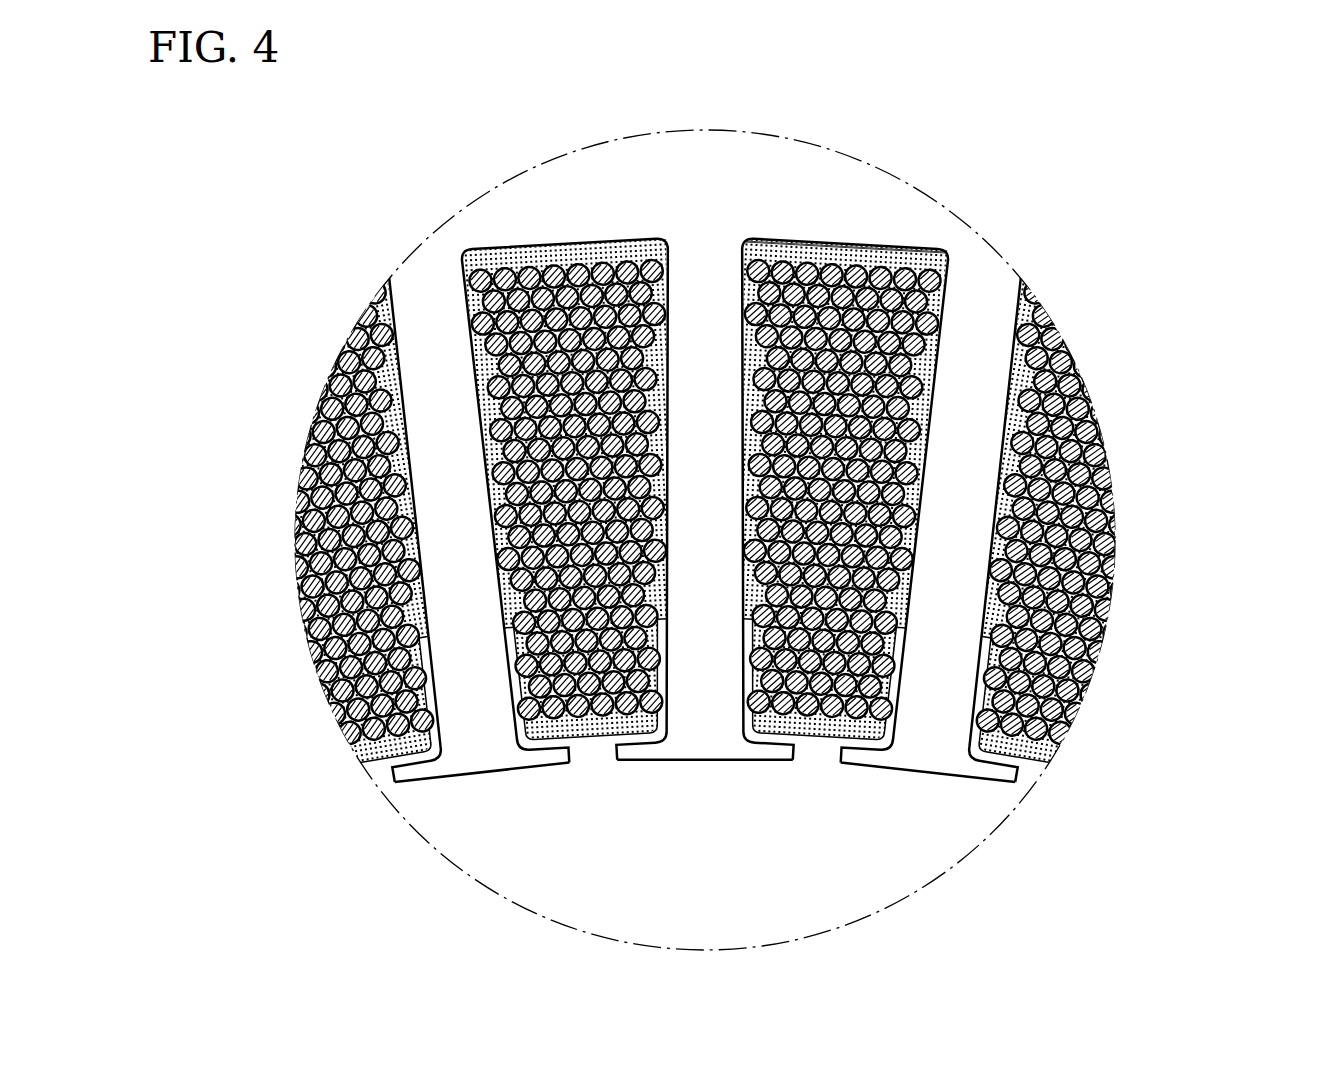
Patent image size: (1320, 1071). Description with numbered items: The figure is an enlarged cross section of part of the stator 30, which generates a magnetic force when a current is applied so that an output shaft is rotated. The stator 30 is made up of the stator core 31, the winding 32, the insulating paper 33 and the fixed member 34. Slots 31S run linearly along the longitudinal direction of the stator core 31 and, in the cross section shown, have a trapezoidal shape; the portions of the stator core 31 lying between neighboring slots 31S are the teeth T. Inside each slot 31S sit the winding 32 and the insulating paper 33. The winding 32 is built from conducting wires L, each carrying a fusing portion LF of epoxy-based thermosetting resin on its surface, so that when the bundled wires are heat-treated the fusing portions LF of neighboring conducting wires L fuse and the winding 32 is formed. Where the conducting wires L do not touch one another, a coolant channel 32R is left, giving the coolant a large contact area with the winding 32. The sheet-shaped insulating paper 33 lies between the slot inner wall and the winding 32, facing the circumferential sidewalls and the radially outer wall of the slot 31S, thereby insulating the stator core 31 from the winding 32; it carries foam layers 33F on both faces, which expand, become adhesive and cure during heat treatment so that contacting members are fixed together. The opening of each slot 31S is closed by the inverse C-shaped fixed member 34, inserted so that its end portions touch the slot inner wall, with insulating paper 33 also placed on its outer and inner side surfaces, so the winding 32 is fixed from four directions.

The stator 30 is at (898, 122).
The stator core 31 is at (680, 150).
The slot 31S is at (705, 520).
The winding 32 is at (704, 508).
The coolant channel 32R is at (704, 508).
The insulating paper 33 is at (705, 508).
The foam layer 33F is at (705, 508).
The fixed member 34 is at (704, 697).
The teeth T is at (705, 794).
The conducting wire L is at (958, 281).
The fusing portion LF is at (950, 276).